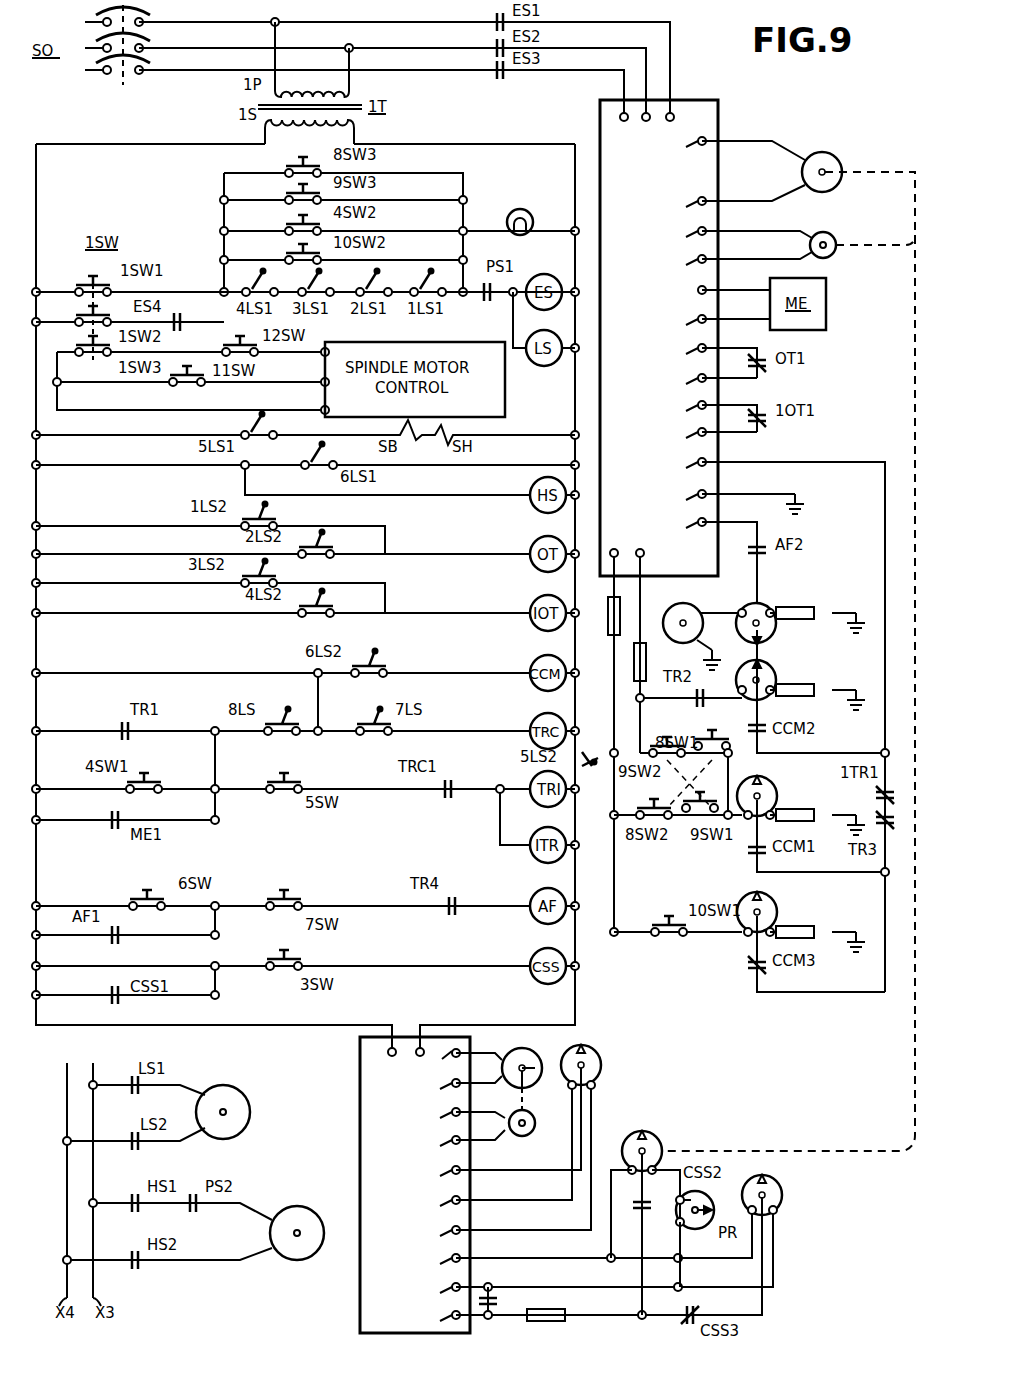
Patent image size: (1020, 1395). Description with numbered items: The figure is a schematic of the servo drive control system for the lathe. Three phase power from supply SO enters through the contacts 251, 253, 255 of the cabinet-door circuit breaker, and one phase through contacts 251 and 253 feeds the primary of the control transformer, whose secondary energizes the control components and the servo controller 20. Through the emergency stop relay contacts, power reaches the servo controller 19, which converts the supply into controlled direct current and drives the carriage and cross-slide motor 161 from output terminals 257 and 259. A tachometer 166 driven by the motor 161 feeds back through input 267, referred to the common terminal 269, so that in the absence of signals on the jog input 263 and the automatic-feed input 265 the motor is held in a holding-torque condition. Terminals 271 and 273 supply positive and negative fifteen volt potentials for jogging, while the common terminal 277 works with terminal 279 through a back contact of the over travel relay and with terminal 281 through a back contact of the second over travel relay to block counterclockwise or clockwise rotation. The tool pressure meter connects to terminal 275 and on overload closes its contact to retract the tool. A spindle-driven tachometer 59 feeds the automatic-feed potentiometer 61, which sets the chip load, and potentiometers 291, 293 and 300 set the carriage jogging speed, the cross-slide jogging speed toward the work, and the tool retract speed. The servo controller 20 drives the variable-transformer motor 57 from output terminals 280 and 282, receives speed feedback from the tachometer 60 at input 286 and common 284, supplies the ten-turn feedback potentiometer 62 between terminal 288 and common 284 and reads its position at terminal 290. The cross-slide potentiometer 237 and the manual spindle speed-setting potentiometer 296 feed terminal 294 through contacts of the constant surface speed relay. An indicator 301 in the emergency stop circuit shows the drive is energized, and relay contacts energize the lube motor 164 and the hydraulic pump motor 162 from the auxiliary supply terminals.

The circuit breaker contact 251 is at (148, 18).
The circuit breaker contact 253 is at (148, 44).
The circuit breaker contact 255 is at (148, 66).
The output terminal 257 is at (731, 146).
The output terminal 259 is at (731, 196).
The tachometer input 267 is at (735, 227).
The common terminal 269 is at (735, 379).
The meter terminal 275 is at (714, 315).
The counterclockwise limiting terminal 279 is at (707, 356).
The common terminal 277 is at (707, 374).
The clockwise limiting terminal 281 is at (709, 428).
The jog input 263 is at (771, 720).
The automatic-feed input 265 is at (707, 555).
The voltage-deriving terminal 271 is at (626, 539).
The voltage-deriving terminal 273 is at (644, 551).
The indicator 301 is at (532, 196).
The motor 161 is at (838, 162).
The tachometer 166 is at (840, 226).
The servo controller 19 is at (662, 298).
The tachometer 59 is at (700, 592).
The automatic-feed potentiometer 61 is at (775, 632).
The potentiometer 300 is at (770, 668).
The potentiometer 291 is at (770, 787).
The potentiometer 293 is at (770, 903).
The motor 57 is at (530, 1055).
The servo potentiometer 62 is at (594, 1056).
The tachometer 60 is at (530, 1114).
The servo controller 20 is at (390, 1199).
The output terminal 280 is at (455, 1055).
The output terminal 282 is at (580, 1171).
The input terminal 286 is at (456, 1113).
The common terminal 284 is at (590, 1191).
The position terminal 290 is at (494, 1132).
The supply terminal 288 is at (499, 1162).
The input terminal 294 is at (585, 1261).
The cross-slide potentiometer 237 is at (652, 1140).
The manual spindle speed-setting potentiometer 296 is at (773, 1186).
The lube motor 164 is at (245, 1100).
The hydraulic pump motor 162 is at (328, 1208).